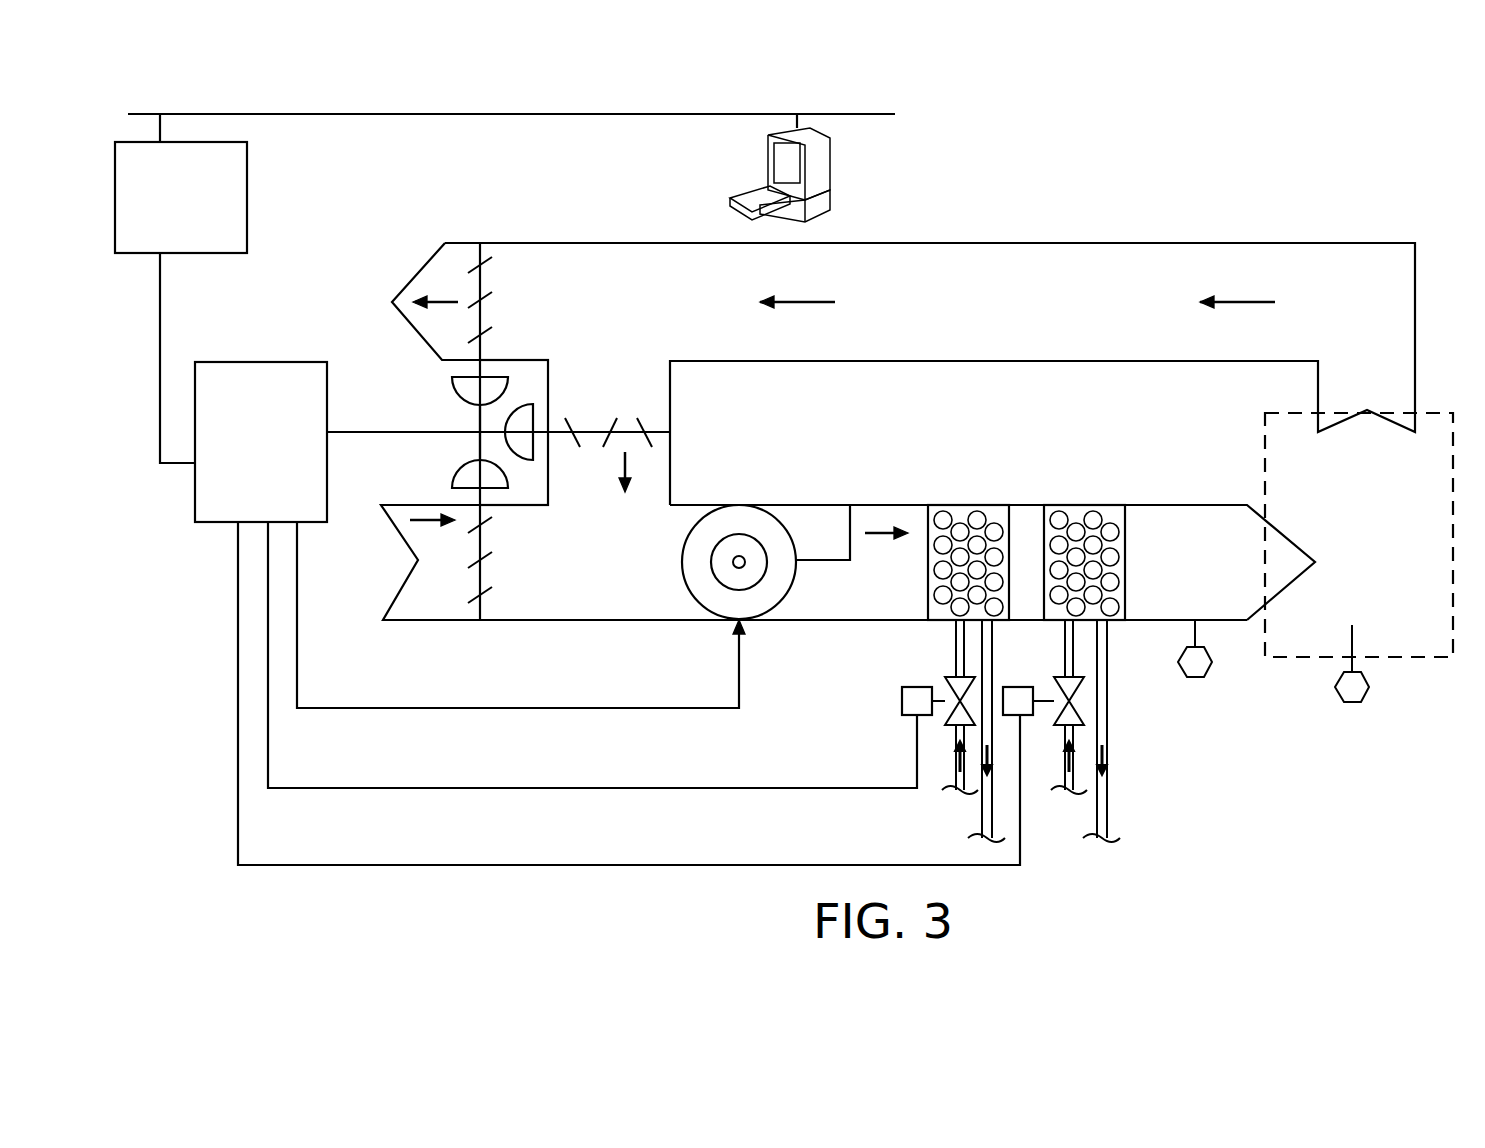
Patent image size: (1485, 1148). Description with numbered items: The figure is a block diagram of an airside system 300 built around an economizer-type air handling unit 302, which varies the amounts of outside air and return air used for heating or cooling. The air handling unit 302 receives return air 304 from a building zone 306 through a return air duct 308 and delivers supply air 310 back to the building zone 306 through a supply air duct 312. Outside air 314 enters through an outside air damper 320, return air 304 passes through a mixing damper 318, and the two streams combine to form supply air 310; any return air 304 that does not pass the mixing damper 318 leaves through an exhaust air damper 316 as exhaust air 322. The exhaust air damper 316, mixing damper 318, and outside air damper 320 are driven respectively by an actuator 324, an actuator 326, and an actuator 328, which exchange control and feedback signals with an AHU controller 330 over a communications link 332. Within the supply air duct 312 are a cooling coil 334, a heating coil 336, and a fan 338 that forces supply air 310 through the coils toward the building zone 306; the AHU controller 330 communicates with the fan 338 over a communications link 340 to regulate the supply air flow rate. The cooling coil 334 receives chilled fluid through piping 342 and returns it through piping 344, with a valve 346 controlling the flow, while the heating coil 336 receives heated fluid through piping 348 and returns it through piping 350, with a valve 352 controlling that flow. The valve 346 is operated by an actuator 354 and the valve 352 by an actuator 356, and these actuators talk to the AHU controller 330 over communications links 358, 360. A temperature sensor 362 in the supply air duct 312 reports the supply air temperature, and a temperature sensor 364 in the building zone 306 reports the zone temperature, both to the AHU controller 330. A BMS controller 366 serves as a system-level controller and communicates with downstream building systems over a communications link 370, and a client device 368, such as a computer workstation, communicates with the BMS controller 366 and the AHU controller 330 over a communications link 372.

The airside system 300 is at (505, 92).
The air handling unit 302 is at (1145, 200).
The return air 304 is at (1372, 328).
The building zone 306 is at (1428, 640).
The return air duct 308 is at (1265, 243).
The supply air 310 is at (1218, 523).
The supply air duct 312 is at (1160, 505).
The outside air 314 is at (365, 612).
The exhaust air damper 316 is at (485, 292).
The mixing damper 318 is at (655, 432).
The outside air damper 320 is at (483, 573).
The exhaust air 322 is at (367, 258).
The actuator 324 is at (500, 382).
The actuator 326 is at (528, 412).
The actuator 328 is at (460, 482).
The AHU controller 330 is at (247, 362).
The communications link 332 is at (380, 432).
The cooling coil 334 is at (960, 508).
The heating coil 336 is at (1078, 508).
The fan 338 is at (790, 580).
The communications link 340 is at (540, 708).
The piping 342 is at (950, 644).
The piping 344 is at (982, 818).
The valve 346 is at (950, 680).
The piping 348 is at (1062, 644).
The piping 350 is at (1108, 798).
The valve 352 is at (1060, 680).
The actuator 354 is at (910, 710).
The actuator 356 is at (1022, 712).
The communications link 358 is at (640, 788).
The communications link 360 is at (697, 865).
The temperature sensor 362 is at (1195, 680).
The temperature sensor 364 is at (1352, 705).
The BMS controller 366 is at (181, 197).
The client device 368 is at (835, 165).
The communications link 370 is at (155, 463).
The communications link 372 is at (380, 112).